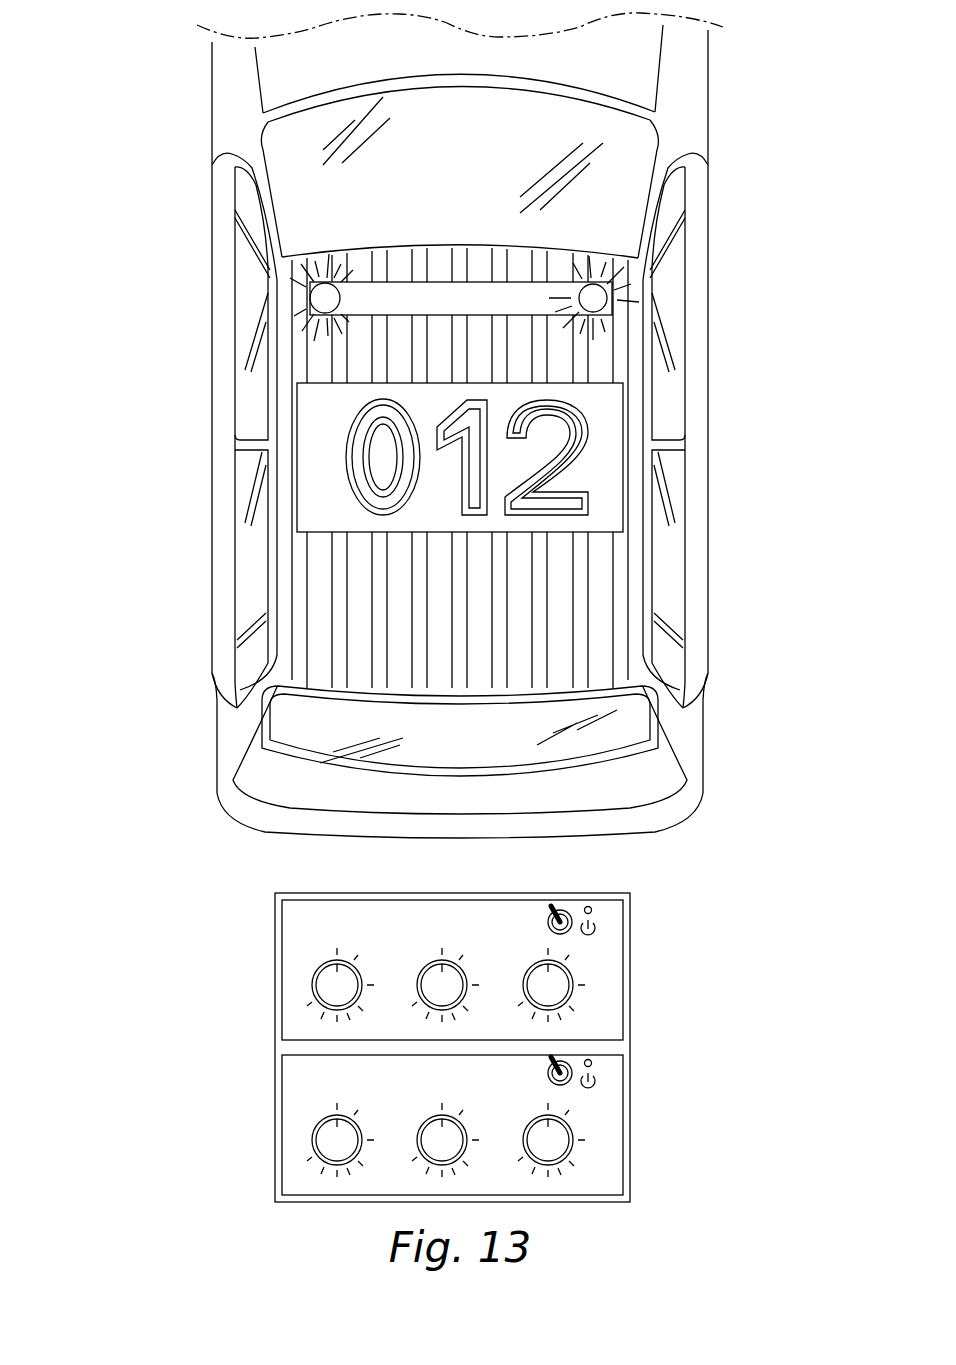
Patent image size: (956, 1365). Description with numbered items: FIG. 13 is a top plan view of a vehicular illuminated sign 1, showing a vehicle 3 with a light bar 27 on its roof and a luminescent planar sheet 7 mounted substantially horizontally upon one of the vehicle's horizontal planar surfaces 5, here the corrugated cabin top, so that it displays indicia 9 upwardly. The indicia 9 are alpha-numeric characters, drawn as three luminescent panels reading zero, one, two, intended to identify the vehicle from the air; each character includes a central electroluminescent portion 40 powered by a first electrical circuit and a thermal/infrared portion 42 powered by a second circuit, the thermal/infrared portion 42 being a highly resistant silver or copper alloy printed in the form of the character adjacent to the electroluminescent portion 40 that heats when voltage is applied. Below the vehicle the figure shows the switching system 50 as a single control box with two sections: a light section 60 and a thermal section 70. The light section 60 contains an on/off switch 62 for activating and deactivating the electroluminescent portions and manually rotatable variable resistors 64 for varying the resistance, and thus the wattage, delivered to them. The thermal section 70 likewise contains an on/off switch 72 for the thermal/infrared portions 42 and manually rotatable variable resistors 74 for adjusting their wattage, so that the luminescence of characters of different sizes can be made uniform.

The vehicular illuminated sign 1 is at (110, 55).
The vehicle 3 is at (690, 46).
The horizontal planar surface 5 is at (306, 64).
The luminescent planar sheet 7 is at (617, 345).
The indicia 9 is at (315, 505).
The light bar 27 is at (308, 298).
The displayed number 40 is at (352, 453).
The thermal/infrared portion 42 is at (346, 427).
The switching system 50 is at (632, 920).
The light control section 60 is at (298, 926).
The on/off switch 62 is at (551, 905).
The adjustable variable resistor 64 is at (318, 983).
The thermal control section 70 is at (298, 1086).
The on/off switch 72 is at (566, 1078).
The adjustable variable resistor 74 is at (318, 1138).